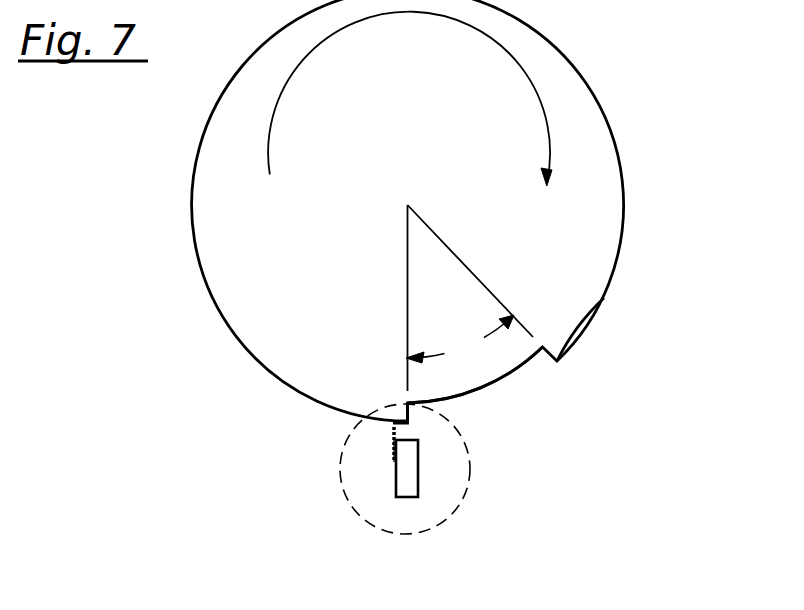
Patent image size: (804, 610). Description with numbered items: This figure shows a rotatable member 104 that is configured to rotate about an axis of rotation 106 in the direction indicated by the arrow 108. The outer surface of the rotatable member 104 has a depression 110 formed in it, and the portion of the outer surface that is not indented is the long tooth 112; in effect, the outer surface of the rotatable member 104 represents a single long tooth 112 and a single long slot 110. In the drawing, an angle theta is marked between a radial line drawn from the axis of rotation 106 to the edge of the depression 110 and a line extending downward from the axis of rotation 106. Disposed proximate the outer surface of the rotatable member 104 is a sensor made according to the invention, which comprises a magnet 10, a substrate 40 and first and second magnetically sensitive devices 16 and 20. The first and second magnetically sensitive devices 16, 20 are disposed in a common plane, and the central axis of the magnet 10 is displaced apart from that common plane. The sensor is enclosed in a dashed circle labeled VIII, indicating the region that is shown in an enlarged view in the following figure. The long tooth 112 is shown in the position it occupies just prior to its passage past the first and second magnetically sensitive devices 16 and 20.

The magnet 10 is at (413, 485).
The first magnetically sensitive device 16 is at (390, 445).
The second magnetically sensitive device 20 is at (393, 428).
The substrate 40 is at (393, 457).
The rotatable member 104 is at (548, 252).
The axis of rotation 106 is at (410, 200).
The arrow 108 is at (380, 63).
The depression 110 is at (512, 373).
The long tooth 112 is at (604, 298).
The angle theta is at (460, 339).
The detail circle referring to FIG. 8 VIII is at (464, 443).